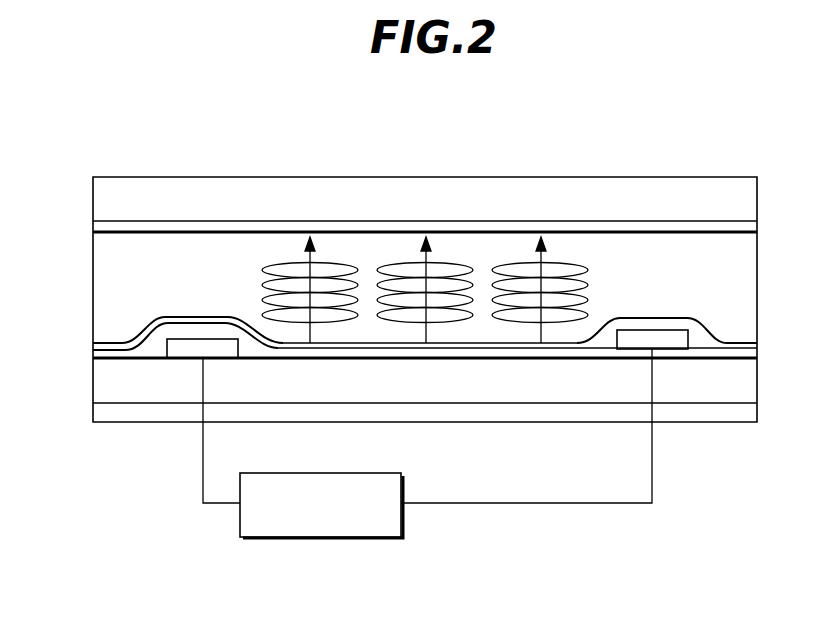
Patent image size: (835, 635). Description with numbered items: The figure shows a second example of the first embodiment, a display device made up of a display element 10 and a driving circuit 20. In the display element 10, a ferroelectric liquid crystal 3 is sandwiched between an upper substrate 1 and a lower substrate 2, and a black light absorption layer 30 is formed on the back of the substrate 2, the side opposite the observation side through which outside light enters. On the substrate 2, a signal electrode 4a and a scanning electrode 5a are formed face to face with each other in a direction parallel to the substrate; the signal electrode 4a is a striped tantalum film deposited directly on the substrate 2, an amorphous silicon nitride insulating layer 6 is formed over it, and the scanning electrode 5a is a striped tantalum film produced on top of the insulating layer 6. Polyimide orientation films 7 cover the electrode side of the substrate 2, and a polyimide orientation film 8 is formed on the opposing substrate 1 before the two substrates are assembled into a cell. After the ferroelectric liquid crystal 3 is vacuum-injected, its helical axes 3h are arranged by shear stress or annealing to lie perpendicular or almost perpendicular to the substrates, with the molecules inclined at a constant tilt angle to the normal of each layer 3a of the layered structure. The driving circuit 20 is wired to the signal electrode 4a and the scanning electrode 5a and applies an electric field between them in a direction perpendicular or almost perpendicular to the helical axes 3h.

The display element 10 is at (96, 73).
The substrate 1 is at (552, 186).
The substrate 2 is at (682, 382).
The ferroelectric liquid crystal 3 is at (363, 242).
The layer 3a is at (281, 262).
The helical axes 3h is at (540, 333).
The signal electrode 4a is at (202, 344).
The scanning electrode 5a is at (656, 336).
The insulating layer 6 is at (105, 354).
The orientation films 7 is at (700, 340).
The orientation film 8 is at (487, 228).
The driving circuit 20 is at (320, 540).
The light absorption layer 30 is at (460, 411).